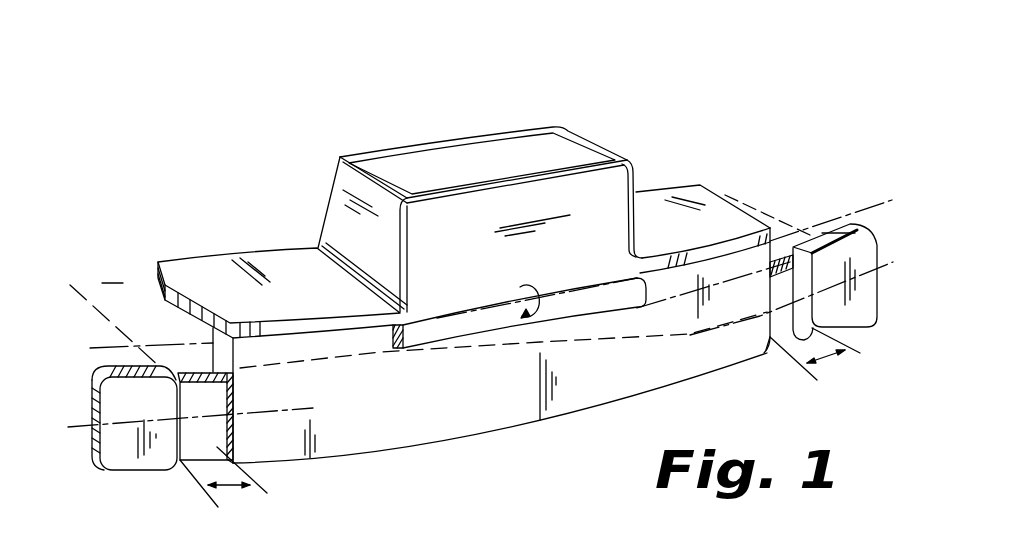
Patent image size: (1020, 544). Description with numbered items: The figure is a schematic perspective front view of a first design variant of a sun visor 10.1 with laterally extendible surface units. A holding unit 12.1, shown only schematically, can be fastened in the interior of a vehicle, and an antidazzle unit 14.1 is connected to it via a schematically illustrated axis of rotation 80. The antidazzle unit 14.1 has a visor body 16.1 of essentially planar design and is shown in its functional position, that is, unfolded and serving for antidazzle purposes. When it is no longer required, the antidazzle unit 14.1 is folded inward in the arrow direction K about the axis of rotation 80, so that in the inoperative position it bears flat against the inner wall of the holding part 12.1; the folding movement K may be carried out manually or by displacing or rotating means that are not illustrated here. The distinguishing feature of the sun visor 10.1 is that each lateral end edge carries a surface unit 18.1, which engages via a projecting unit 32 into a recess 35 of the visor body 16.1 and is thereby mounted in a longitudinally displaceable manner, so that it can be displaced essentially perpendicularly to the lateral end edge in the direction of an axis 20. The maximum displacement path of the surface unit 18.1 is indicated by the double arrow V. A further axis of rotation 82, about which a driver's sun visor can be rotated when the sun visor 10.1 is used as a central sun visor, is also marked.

The sun visor 10.1 is at (773, 78).
The holding unit 12.1 is at (596, 143).
The antidazzle unit 14.1 is at (448, 458).
The visor body 16.1 is at (567, 416).
The surface unit 18.1 is at (117, 465).
The axis 20 is at (180, 463).
The projecting unit 32 is at (237, 464).
The recess 35 is at (130, 325).
The axis of rotation 80 is at (477, 310).
The axis of rotation 82 is at (160, 289).
The arrow direction K is at (537, 297).
The double arrow V is at (240, 487).